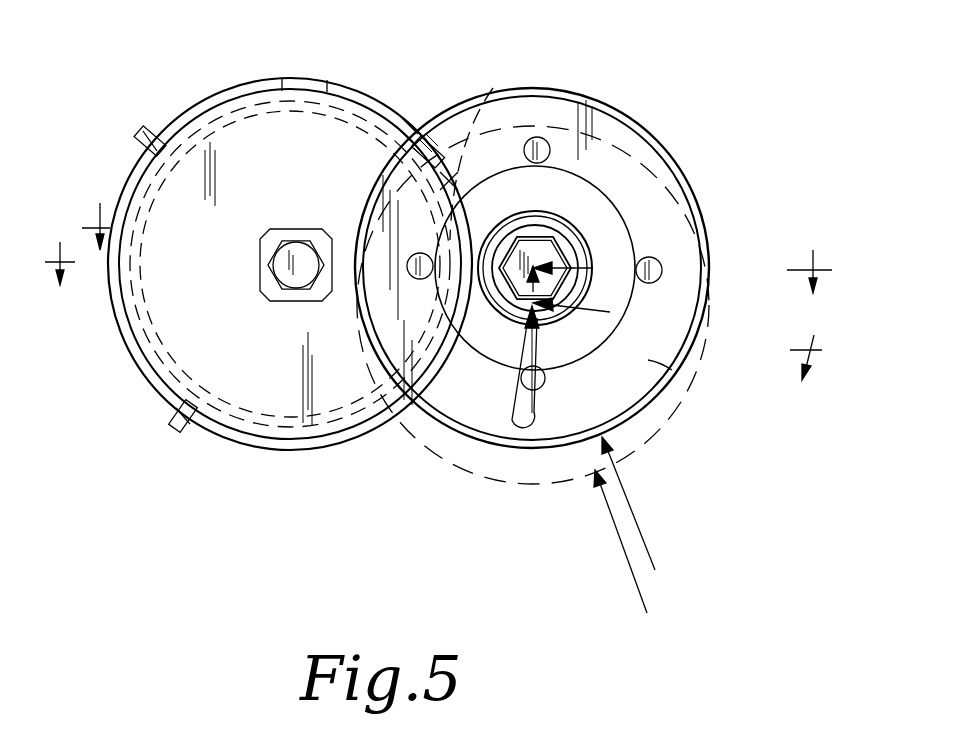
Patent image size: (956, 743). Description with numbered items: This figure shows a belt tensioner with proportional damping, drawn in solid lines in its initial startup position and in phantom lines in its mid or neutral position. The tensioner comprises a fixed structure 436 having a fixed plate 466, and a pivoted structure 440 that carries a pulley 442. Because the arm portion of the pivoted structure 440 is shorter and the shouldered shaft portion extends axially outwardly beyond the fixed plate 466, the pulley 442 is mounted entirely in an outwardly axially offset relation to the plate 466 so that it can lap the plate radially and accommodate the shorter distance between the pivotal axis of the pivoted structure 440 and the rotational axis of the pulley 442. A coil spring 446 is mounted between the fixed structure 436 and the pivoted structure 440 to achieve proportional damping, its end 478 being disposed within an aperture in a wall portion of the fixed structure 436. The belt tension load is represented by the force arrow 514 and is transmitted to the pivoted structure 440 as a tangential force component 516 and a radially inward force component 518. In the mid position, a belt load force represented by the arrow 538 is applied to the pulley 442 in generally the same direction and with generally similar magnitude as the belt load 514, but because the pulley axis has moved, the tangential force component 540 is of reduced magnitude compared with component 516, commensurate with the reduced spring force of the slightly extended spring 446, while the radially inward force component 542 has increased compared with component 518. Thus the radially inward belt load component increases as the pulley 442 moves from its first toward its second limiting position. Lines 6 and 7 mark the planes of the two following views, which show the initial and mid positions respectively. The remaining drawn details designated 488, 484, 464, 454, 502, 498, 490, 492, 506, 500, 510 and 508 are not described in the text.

The pivoted structure 440 is at (262, 450).
The fixed plate 466 is at (318, 402).
The coil spring 446 is at (230, 112).
The locating tab 488 is at (320, 50).
The spring end 478 is at (146, 128).
The locating tab 484 is at (176, 428).
The washer 464 is at (300, 292).
The hex nut 454 is at (312, 240).
The pulley 442 is at (660, 132).
The outer rim 502 is at (708, 238).
The disc face 498 is at (648, 360).
The hidden outline of disc 490 is at (491, 92).
The fixed structure 436 is at (415, 135).
The slot 492 is at (413, 126).
The annular shoulder 506 is at (605, 215).
The notch 500 is at (660, 272).
The hub 510 is at (540, 236).
The radially inward force component 518 is at (578, 254).
The direction arrow 508 is at (627, 334).
The radially inward force component 542 is at (610, 312).
The tangential force component 540 is at (543, 410).
The tangential force component 516 is at (548, 370).
The belt load force arrow 538 is at (617, 538).
The belt tension load force arrow 514 is at (633, 508).
The section line 6 is at (438, 280).
The section line 7 is at (452, 305).